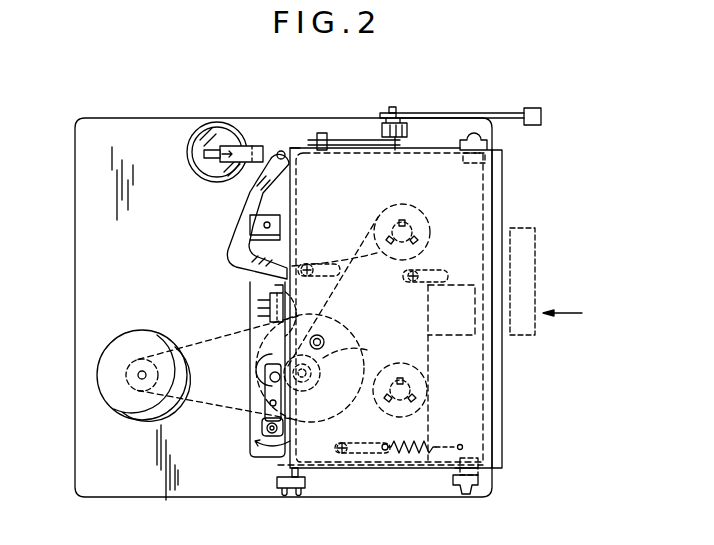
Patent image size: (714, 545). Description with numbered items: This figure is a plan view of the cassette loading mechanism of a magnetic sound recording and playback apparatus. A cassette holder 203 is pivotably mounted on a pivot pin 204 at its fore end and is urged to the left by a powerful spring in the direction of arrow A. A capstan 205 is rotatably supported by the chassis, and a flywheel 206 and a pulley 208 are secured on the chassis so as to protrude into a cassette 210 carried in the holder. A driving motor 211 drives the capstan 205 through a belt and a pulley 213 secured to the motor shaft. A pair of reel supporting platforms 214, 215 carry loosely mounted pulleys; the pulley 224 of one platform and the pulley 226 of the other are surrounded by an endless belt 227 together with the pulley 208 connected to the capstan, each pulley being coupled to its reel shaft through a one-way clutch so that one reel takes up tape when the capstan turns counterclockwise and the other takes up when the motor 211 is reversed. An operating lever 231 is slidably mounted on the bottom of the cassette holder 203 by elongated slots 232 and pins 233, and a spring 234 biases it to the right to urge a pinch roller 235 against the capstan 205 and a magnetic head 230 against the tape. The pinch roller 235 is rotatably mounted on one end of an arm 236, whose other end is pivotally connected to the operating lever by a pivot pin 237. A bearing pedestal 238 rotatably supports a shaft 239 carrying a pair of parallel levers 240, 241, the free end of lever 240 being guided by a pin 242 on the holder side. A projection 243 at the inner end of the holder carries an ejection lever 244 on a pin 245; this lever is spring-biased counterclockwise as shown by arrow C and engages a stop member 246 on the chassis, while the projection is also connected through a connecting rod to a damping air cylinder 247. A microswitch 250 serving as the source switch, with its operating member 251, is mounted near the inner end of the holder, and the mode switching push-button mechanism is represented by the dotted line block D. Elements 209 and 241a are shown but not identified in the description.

The cassette holder 203 is at (496, 197).
The pivot pin 204 is at (492, 132).
The capstan 205 is at (363, 351).
The flywheel 206 is at (335, 365).
The pulley 208 is at (312, 388).
The pin 209 is at (318, 335).
The cassette 210 is at (505, 170).
The driving motor 211 is at (124, 342).
The pulley 213 is at (130, 388).
The reel supporting platform 214 is at (426, 396).
The reel supporting platform 215 is at (413, 216).
The pulley 224 is at (416, 376).
The pulley 226 is at (382, 215).
The endless belt 227 is at (430, 303).
The magnetic head 230 is at (266, 292).
The operating lever 231 is at (262, 306).
The elongated slots 232 is at (433, 272).
The pins 233 is at (356, 443).
The spring 234 is at (416, 460).
The pinch roller 235 is at (264, 366).
The arm 236 is at (266, 404).
The pivot pin 237 is at (262, 432).
The bearing pedestal 238 is at (394, 107).
The shaft 239 is at (415, 113).
The lever 240 is at (332, 139).
The lever 241 is at (470, 113).
The knob 241a is at (538, 108).
The pin 242 is at (324, 132).
The projection 243 is at (287, 144).
The ejection lever 244 is at (250, 203).
The pin 245 is at (288, 160).
The stop member 246 is at (250, 217).
The air cylinder 247 is at (216, 124).
The microswitch 250 is at (290, 504).
The operating member 251 is at (321, 499).
The arrow A is at (565, 313).
The arrow C is at (278, 141).
The dotted line block D is at (535, 241).